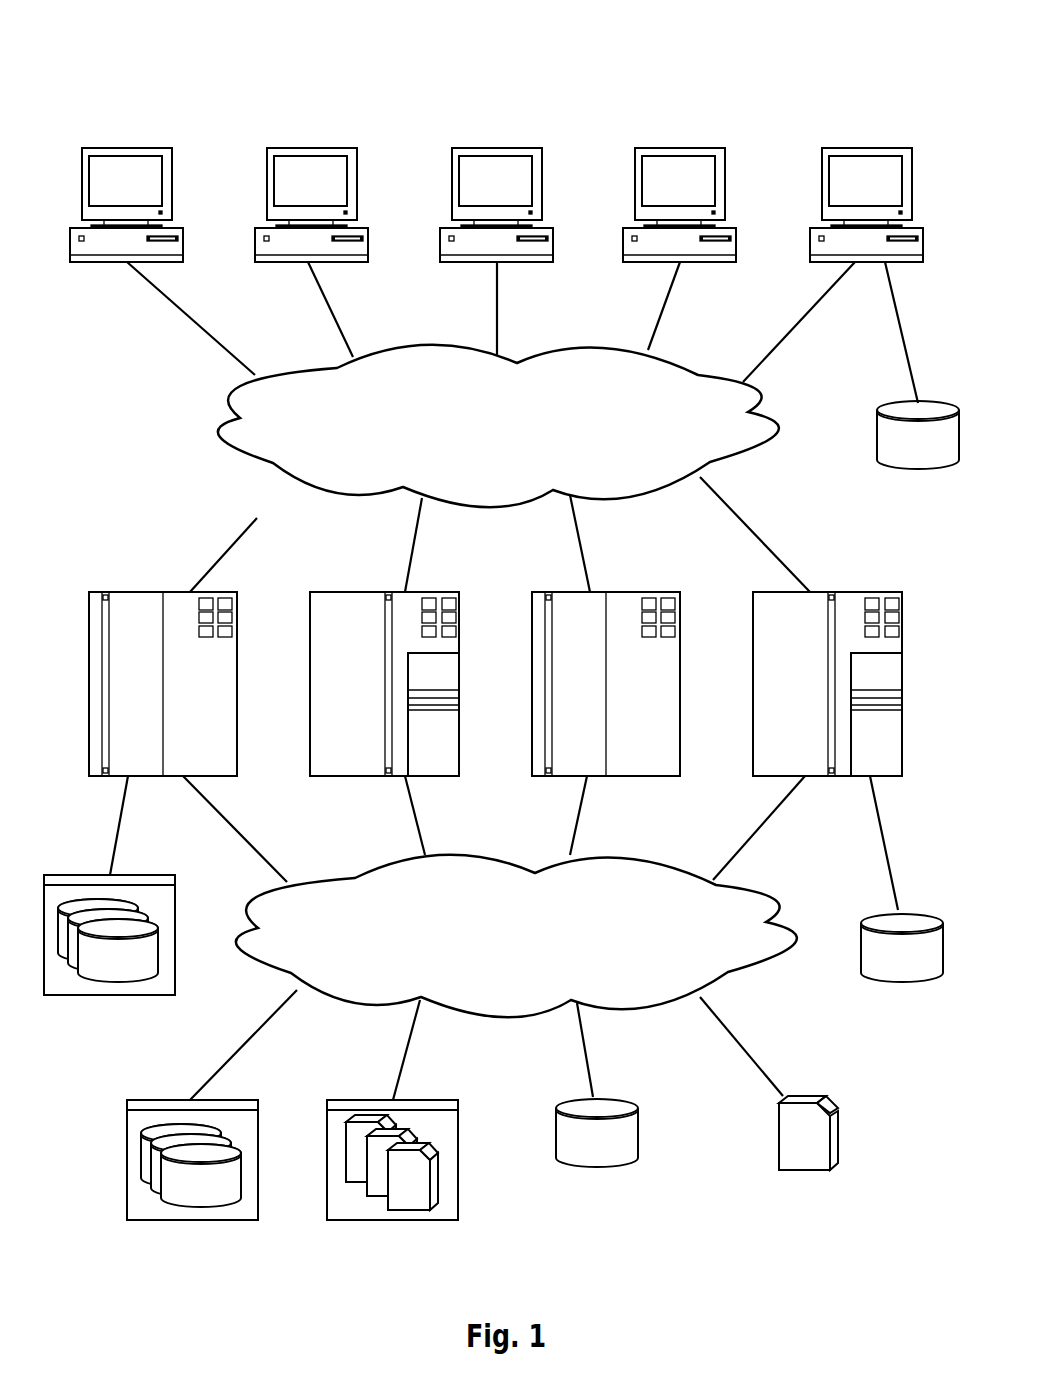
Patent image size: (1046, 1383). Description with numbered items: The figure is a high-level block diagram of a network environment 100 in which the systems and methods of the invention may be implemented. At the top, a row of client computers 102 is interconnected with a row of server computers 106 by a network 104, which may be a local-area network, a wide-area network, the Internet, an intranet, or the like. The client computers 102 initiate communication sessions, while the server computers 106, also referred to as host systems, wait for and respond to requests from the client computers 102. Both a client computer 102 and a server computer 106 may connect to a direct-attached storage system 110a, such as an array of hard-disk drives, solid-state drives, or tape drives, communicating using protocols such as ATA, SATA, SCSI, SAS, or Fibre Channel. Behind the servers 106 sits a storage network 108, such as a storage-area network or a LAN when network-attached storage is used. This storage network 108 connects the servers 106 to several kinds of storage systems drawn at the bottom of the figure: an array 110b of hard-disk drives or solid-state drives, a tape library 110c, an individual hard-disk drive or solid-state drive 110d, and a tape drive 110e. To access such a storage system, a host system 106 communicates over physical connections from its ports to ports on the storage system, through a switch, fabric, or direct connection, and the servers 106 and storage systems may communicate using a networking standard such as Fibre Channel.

The network environment 100 is at (204, 76).
The client computer 102 is at (142, 192).
The network 104 is at (512, 452).
The server computer 106 is at (119, 691).
The storage network 108 is at (530, 962).
The direct-attached storage system 110a is at (920, 465).
The array of hard-disk drives or solid-state drives 110b is at (190, 1220).
The tape library 110c is at (392, 1220).
The individual hard-disk drive or solid-state drive 110d is at (595, 1167).
The tape drive 110e is at (803, 1170).